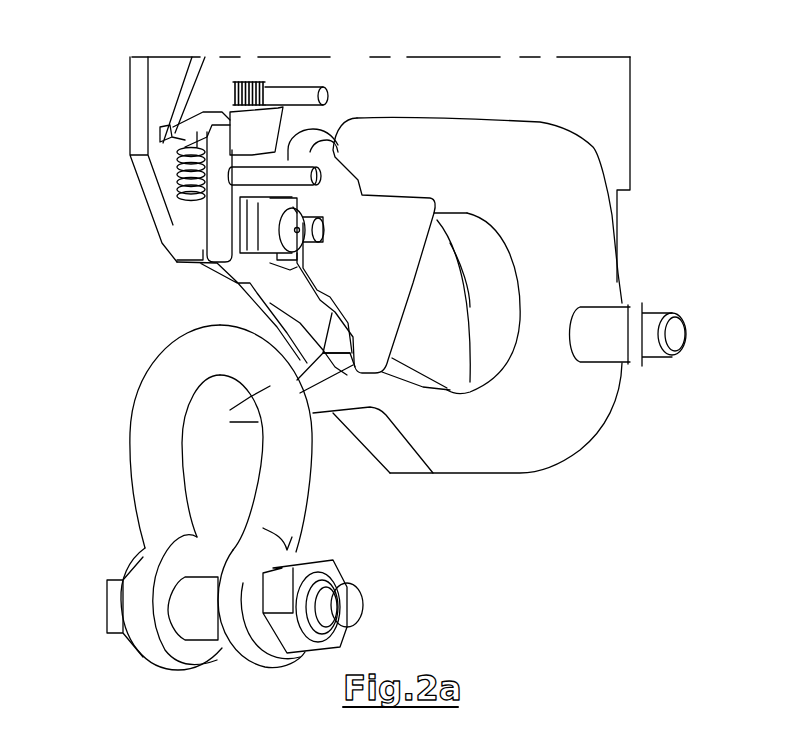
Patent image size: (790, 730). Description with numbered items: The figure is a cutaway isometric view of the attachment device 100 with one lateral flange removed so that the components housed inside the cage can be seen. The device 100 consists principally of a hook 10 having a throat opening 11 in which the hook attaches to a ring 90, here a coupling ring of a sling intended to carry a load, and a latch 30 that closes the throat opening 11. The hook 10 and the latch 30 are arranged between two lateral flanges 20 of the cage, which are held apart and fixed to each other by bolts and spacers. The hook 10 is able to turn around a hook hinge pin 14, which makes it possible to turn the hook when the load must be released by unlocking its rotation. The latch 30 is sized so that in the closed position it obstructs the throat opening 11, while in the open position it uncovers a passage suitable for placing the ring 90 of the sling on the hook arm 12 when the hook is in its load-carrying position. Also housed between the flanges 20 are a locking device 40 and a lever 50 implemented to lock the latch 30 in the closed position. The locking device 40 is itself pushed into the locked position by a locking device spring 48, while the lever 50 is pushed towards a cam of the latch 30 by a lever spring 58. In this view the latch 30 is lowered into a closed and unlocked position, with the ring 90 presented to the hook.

The attachment device 100 is at (390, 273).
The hook 10 is at (514, 175).
The throat opening 11 is at (445, 334).
The hook arm 12 is at (417, 425).
The hook hinge pin 14 is at (673, 335).
The lateral flange 20 is at (602, 94).
The latch 30 is at (392, 267).
The locking device 40 is at (213, 228).
The locking device spring 48 is at (174, 183).
The lever 50 is at (213, 119).
The lever spring 58 is at (248, 83).
The ring 90 is at (150, 505).